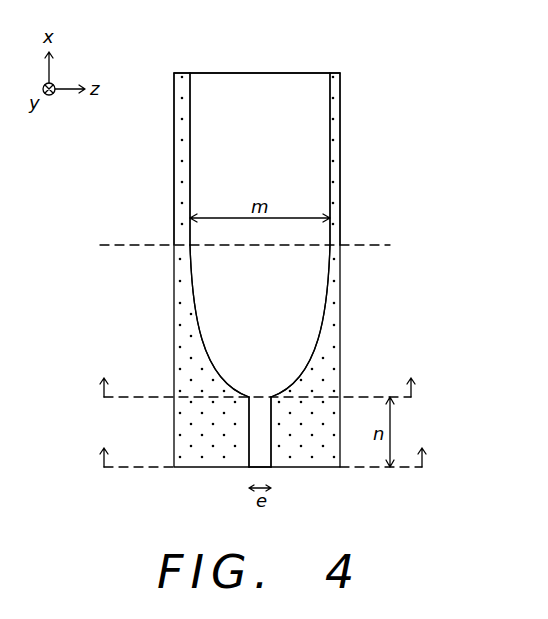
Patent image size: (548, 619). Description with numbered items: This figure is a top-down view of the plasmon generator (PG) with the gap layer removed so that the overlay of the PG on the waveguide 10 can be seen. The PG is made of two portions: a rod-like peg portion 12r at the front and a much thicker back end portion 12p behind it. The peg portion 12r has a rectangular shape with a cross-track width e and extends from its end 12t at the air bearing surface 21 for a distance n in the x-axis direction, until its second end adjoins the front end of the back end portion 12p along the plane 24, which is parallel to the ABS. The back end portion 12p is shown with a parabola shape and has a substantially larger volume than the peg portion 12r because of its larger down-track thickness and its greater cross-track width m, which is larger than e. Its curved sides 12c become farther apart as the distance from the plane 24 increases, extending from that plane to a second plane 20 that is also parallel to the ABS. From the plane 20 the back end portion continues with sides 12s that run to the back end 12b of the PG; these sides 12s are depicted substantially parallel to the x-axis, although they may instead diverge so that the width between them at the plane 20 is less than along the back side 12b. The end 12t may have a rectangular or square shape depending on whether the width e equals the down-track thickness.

The waveguide 10 is at (177, 285).
The back end of the PG 12b is at (240, 73).
The back end portion 12p is at (297, 111).
The sides 12s is at (181, 172).
The curved sides 12c is at (196, 318).
The peg portion 12r is at (260, 446).
The end of the peg portion 12t is at (263, 468).
The plane 20- 20 is at (246, 245).
The plane 24- 24 is at (257, 374).
The air bearing surface (ABS) 21 is at (262, 444).